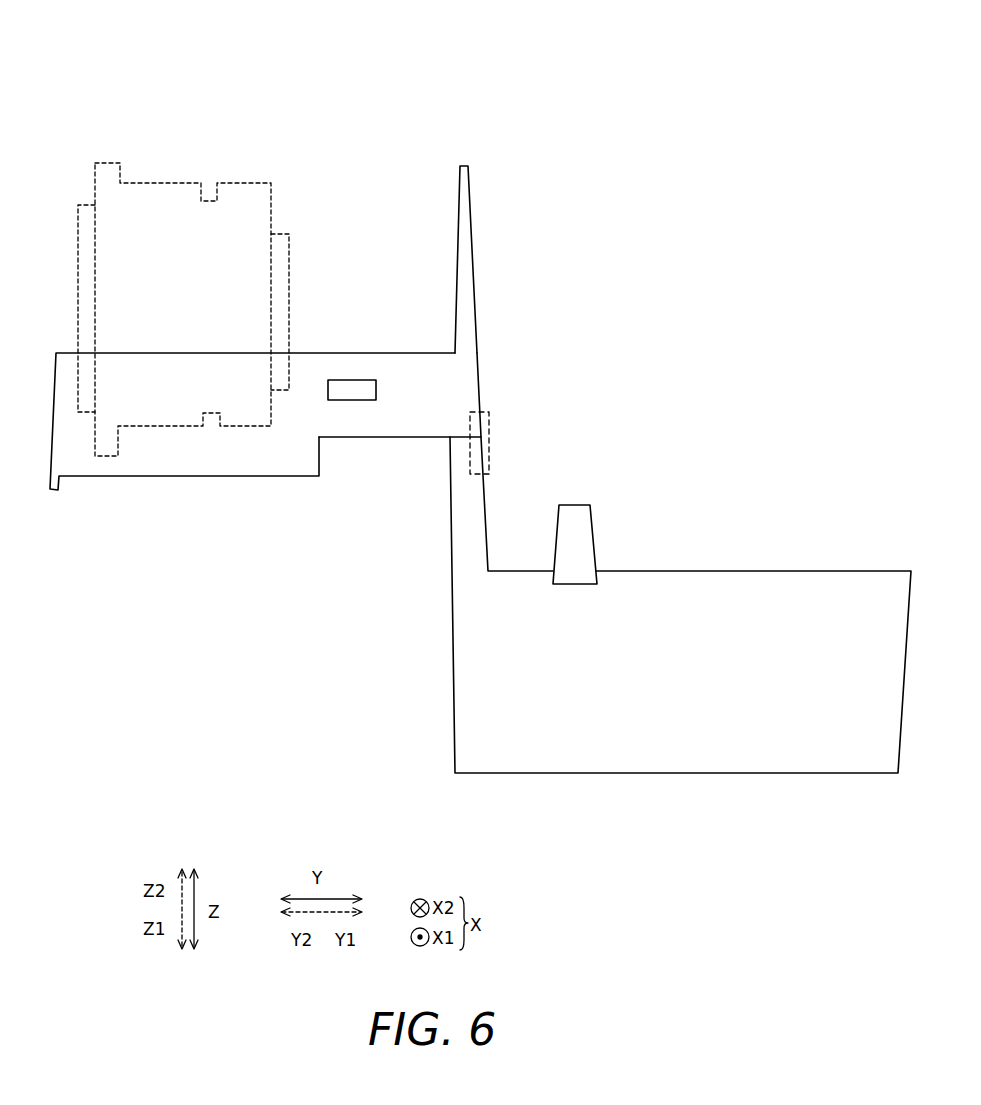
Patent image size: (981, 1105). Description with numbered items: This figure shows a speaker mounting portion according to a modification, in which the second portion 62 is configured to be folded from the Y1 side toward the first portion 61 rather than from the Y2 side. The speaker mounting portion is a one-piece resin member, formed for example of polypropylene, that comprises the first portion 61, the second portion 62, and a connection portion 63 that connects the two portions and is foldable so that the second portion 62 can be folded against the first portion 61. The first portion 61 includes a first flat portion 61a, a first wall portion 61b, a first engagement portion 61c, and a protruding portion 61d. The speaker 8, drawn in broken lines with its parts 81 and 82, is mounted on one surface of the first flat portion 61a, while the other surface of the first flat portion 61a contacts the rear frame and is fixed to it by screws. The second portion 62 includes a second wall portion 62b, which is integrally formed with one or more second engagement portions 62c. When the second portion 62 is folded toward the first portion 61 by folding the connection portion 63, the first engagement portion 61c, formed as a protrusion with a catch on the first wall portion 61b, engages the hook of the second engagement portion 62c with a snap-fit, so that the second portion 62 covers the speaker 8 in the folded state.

The speaker 8 is at (287, 185).
The first portion of transport mechanism 81 is at (95, 163).
The second portion of transport mechanism 82 is at (289, 262).
The first portion 61 is at (490, 184).
The first flat portion 61a is at (156, 476).
The first wall portion 61b is at (481, 396).
The first engagement portion 61c is at (357, 380).
The protruding portion 61d is at (474, 292).
The second portion 62 is at (400, 676).
The second wall portion 62b is at (779, 571).
The second engagement portion 62c is at (595, 542).
The connection portion 63 is at (483, 443).